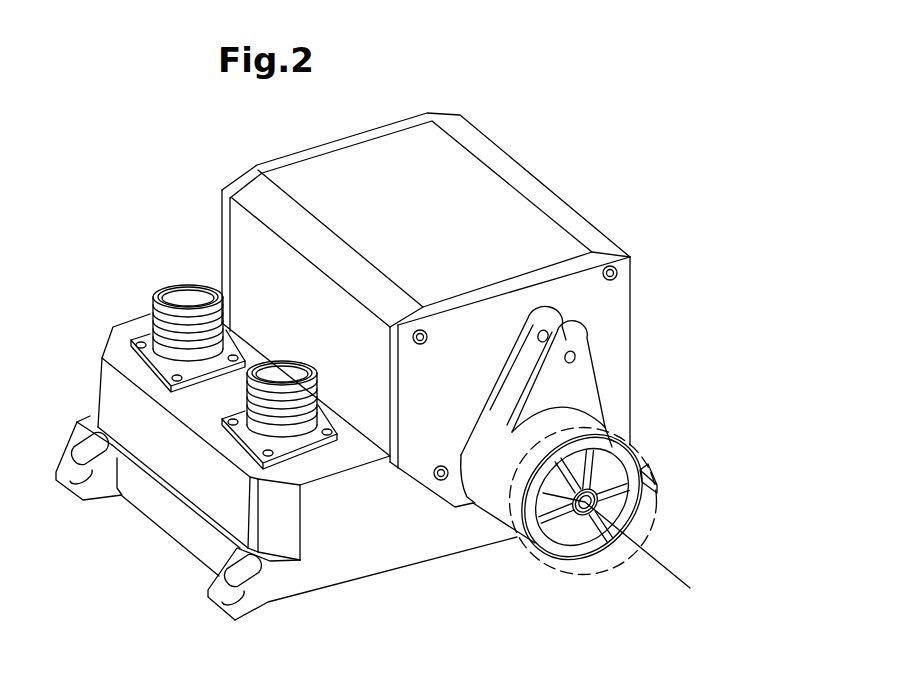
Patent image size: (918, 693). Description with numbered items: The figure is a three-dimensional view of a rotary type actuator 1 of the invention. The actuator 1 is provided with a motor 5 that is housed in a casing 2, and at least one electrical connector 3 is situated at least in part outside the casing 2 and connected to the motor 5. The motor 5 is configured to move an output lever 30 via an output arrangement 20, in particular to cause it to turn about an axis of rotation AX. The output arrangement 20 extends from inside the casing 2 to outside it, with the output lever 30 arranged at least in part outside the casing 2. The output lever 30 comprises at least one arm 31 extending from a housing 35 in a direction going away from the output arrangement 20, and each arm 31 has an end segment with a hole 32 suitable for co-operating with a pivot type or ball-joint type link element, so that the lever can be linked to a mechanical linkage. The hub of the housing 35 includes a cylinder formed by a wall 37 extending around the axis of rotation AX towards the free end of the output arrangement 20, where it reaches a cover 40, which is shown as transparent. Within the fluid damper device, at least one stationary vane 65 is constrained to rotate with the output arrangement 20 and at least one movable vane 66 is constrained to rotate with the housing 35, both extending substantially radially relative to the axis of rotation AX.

The actuator 1 is at (183, 173).
The casing 2 is at (468, 190).
The motor 5 is at (426, 220).
The electrical connector 3 is at (188, 288).
The output arrangement 20 is at (608, 535).
The output lever 30 is at (603, 395).
The arm 31 is at (516, 339).
The hole 32 is at (542, 333).
The housing 35 is at (473, 503).
The wall 37 is at (513, 522).
The cover 40 is at (641, 453).
The stationary vane 65 is at (552, 540).
The movable vane 66 is at (600, 495).
The axis of rotation AX is at (663, 567).